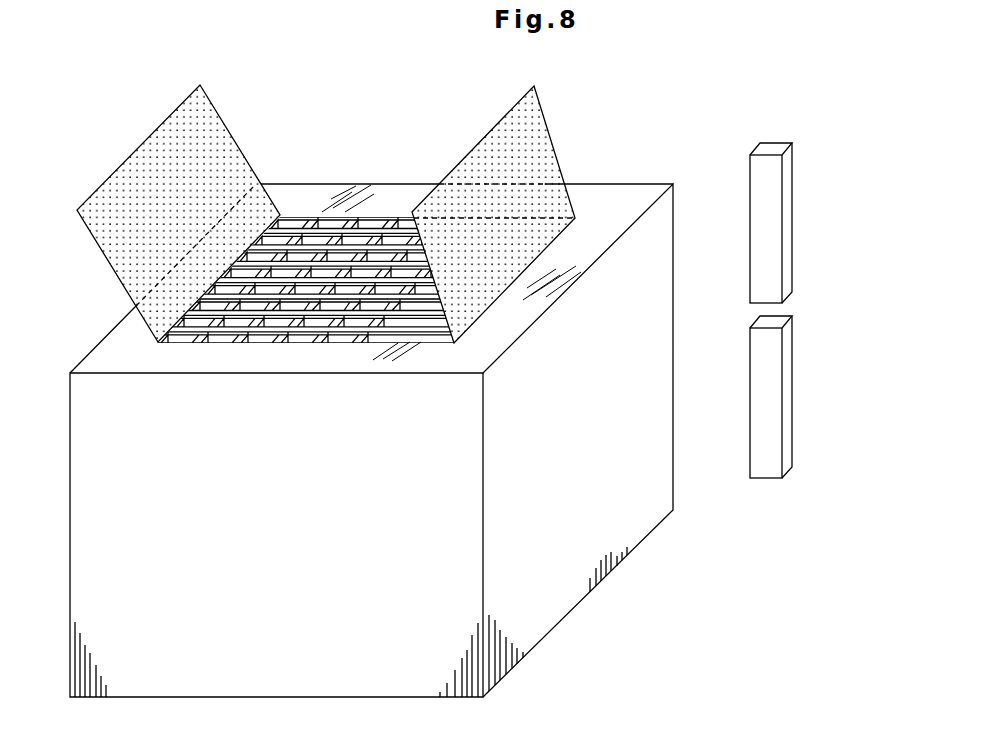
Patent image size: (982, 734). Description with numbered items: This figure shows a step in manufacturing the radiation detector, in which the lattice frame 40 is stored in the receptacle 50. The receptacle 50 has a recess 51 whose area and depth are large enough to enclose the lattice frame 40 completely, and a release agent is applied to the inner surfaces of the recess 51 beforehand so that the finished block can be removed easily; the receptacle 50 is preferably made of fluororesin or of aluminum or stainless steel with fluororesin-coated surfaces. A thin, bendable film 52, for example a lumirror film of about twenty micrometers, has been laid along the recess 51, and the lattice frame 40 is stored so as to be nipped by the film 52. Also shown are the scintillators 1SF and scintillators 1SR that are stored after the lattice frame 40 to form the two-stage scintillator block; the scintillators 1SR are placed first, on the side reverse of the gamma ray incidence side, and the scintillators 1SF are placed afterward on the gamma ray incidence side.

The lattice frame 40 is at (302, 226).
The receptacle 50 is at (143, 320).
The recess 51 is at (397, 222).
The film 52 is at (540, 120).
The scintillators 1SF is at (790, 185).
The scintillators 1SR is at (790, 360).